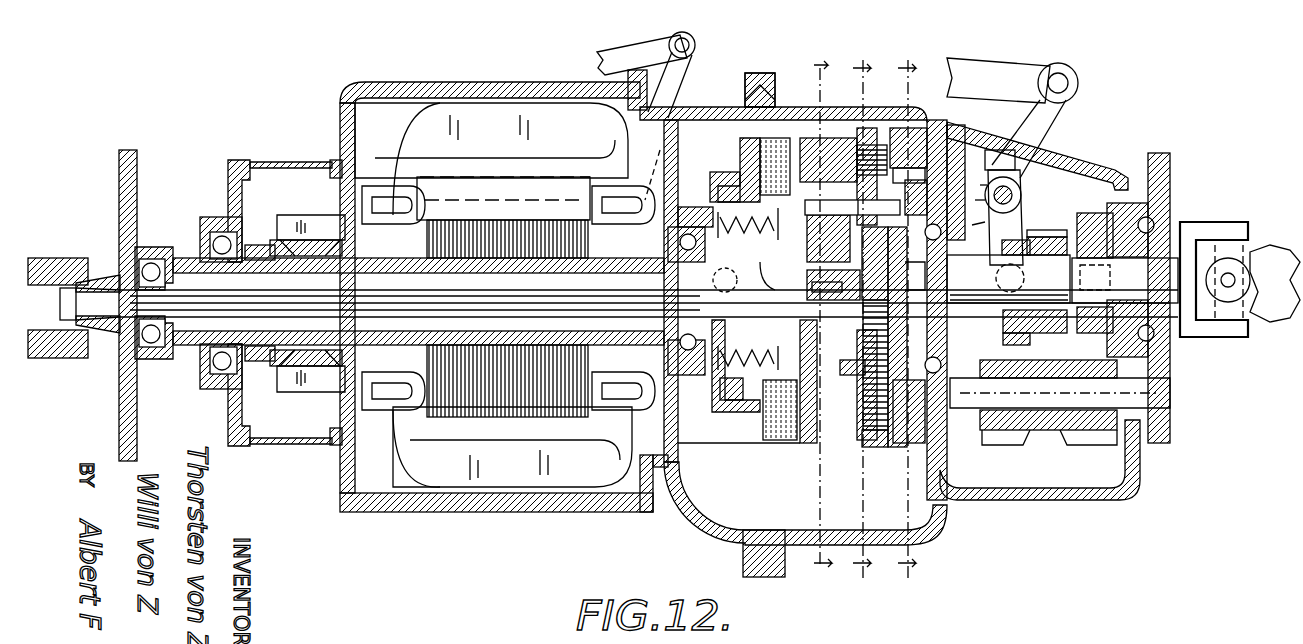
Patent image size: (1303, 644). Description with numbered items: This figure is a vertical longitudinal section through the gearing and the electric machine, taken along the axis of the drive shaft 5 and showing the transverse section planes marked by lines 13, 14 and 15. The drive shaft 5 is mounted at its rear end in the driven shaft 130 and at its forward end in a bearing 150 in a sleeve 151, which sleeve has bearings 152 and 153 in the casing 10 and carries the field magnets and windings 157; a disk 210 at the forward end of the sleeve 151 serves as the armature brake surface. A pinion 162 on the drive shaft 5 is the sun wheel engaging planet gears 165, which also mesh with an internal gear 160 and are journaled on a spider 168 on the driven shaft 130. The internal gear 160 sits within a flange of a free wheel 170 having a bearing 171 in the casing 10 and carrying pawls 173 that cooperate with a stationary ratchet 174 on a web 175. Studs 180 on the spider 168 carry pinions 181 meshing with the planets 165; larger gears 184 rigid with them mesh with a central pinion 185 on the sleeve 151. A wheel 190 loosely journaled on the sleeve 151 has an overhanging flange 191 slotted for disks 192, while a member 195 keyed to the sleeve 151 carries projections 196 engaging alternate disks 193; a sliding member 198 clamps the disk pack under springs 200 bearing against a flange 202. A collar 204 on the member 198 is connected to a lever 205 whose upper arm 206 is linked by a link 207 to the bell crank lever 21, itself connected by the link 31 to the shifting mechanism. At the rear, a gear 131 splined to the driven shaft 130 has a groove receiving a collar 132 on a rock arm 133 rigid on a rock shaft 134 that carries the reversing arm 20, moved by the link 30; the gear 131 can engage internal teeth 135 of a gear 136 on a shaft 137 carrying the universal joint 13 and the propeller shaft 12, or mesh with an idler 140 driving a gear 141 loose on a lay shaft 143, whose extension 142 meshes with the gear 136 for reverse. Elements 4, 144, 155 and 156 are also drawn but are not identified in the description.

The coupling nut 4 is at (75, 358).
The drive shaft 5 is at (112, 340).
The casing 10 is at (600, 515).
The propeller shaft 12 is at (1275, 283).
The universal joint 13 is at (1220, 355).
The section line 14 is at (872, 314).
The section line 15 is at (918, 314).
The reversing arm 20 is at (1060, 120).
The bell crank lever 21 is at (690, 78).
The link 30 is at (1012, 80).
The link 31 is at (648, 48).
The driven shaft 130 is at (1008, 279).
The gear 131 is at (1070, 268).
The collar 132 is at (1012, 236).
The rock arm 133 is at (1025, 195).
The rock shaft 134 is at (971, 185).
The internal teeth 135 is at (1100, 256).
The gear 136 is at (1110, 208).
The shaft 137 is at (1200, 279).
The idler 140 is at (1010, 343).
The gear 141 is at (1008, 445).
The extension 142 is at (1085, 445).
The lay shaft 143 is at (1060, 393).
The key 144 is at (855, 390).
The bearing 150 is at (155, 258).
The sleeve 151 is at (163, 365).
The bearing 152 is at (225, 215).
The bearing 153 is at (665, 345).
The armature core 155 is at (495, 415).
The brush 156 is at (310, 392).
The field magnets and windings 157 is at (493, 295).
The internal gear 160 is at (868, 130).
The pinion 162 is at (925, 268).
The planet gears 165 is at (862, 420).
The spider 168 is at (969, 203).
The free wheel 170 is at (910, 125).
The bearing 171 is at (969, 223).
The pawls 173 is at (950, 130).
The stationary ratchet 174 is at (922, 197).
The web 175 is at (984, 163).
The studs 180 is at (852, 208).
The pinions 181 is at (873, 208).
The larger gears 184 is at (843, 296).
The central pinion 185 is at (830, 282).
The wheel 190 is at (818, 138).
The overhanging flange 191 is at (745, 445).
The disks 192 is at (775, 443).
The alternate disks 193 is at (755, 425).
The member 195 is at (778, 276).
The projections 196 is at (745, 405).
The member 198 is at (740, 160).
The springs 200 is at (712, 405).
The flange 202 is at (680, 380).
The collar 204 is at (712, 180).
The lever 205 is at (740, 280).
The upper arm 206 is at (659, 175).
The link 207 is at (740, 188).
The disk 210 is at (140, 158).